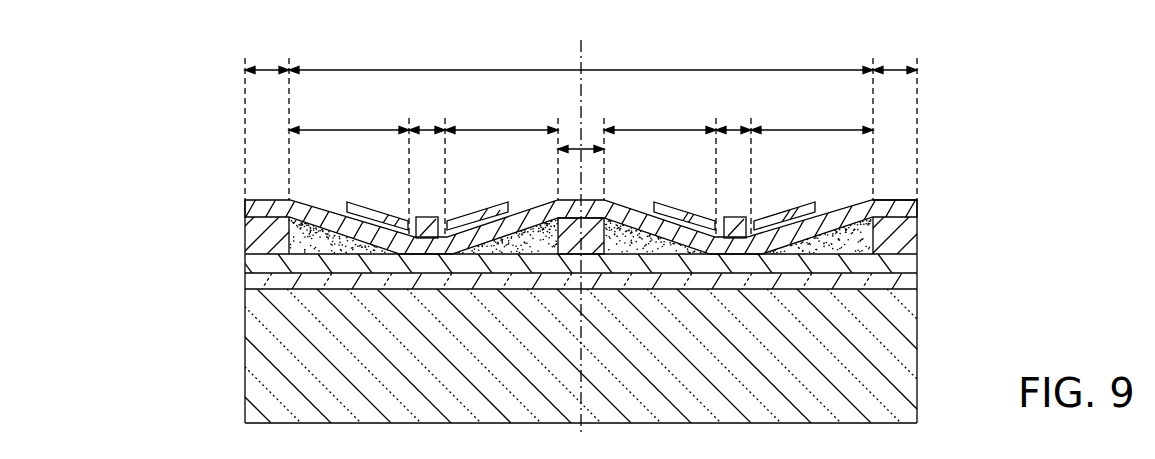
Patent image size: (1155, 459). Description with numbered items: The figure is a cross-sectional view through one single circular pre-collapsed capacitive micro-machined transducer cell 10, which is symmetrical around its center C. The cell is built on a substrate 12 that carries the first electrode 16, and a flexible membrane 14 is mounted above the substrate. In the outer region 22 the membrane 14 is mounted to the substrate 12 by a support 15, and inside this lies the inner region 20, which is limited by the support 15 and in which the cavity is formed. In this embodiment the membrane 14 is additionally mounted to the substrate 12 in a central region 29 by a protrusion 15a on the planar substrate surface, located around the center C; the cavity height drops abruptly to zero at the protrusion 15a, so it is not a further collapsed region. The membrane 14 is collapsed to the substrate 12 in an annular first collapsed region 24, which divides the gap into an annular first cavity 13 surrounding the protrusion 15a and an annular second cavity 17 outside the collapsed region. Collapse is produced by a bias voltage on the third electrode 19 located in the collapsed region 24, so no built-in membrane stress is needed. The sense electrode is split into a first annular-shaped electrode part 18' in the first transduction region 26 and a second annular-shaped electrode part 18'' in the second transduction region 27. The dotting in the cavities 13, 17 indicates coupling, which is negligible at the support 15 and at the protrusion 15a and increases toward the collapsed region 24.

The pre-collapsed capacitive micro-machined transducer cell 10 is at (1017, 90).
The substrate 12 is at (962, 258).
The first cavity 13 is at (534, 243).
The membrane 14 is at (917, 208).
The support 15 is at (258, 233).
The protrusion 15a is at (608, 215).
The first electrode 16 is at (915, 262).
The second cavity 17 is at (322, 216).
The first annular-shaped electrode part 18' is at (581, 201).
The second annular-shaped electrode part 18'' is at (581, 199).
The third electrode 19 is at (427, 224).
The inner region 20 is at (664, 66).
The outer region 22 is at (270, 66).
The first collapsed region 24 is at (428, 128).
The first transduction region 26 is at (493, 128).
The second transduction region 27 is at (363, 128).
The central region 29 is at (578, 146).
The center C is at (582, 98).